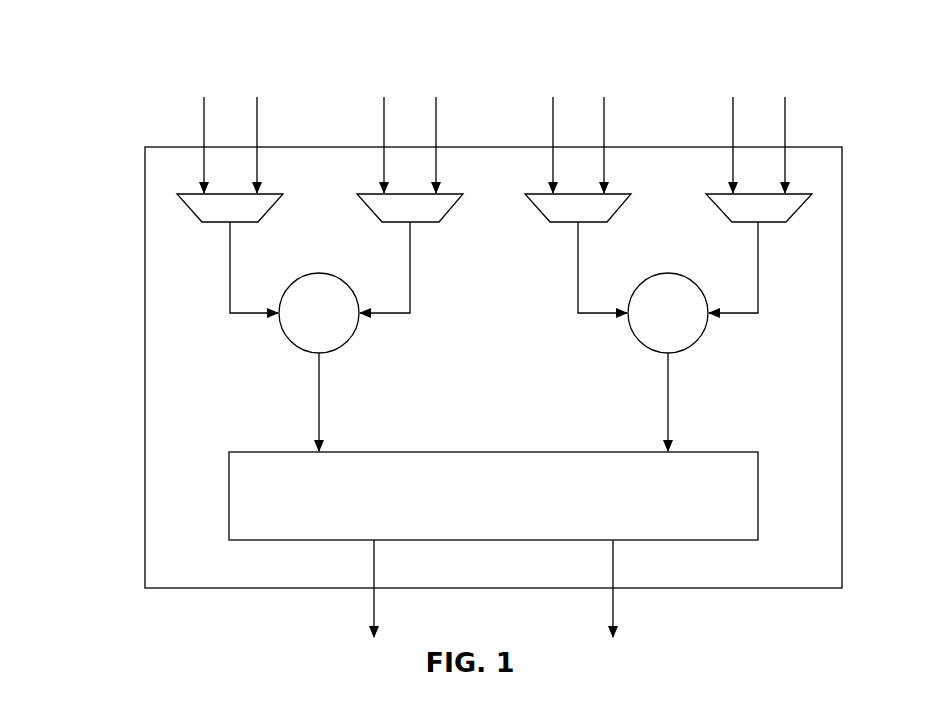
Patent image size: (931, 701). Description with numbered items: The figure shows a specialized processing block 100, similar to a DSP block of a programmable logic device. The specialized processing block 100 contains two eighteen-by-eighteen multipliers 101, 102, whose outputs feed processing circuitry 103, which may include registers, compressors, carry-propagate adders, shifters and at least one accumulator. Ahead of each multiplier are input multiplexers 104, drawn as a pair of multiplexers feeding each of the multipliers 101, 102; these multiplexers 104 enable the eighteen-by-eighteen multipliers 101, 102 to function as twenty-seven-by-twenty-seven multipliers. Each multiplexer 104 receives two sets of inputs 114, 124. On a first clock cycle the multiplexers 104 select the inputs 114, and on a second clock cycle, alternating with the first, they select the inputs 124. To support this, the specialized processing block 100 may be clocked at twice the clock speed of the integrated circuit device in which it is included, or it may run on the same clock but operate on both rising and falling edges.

The specialized processing block 100 is at (138, 43).
The 18×18 multiplier 101 is at (360, 328).
The 18×18 multiplier 102 is at (707, 327).
The processing circuitry 103 is at (293, 452).
The input multiplexer 104 is at (375, 195).
The input 114 is at (204, 108).
The input 124 is at (257, 108).